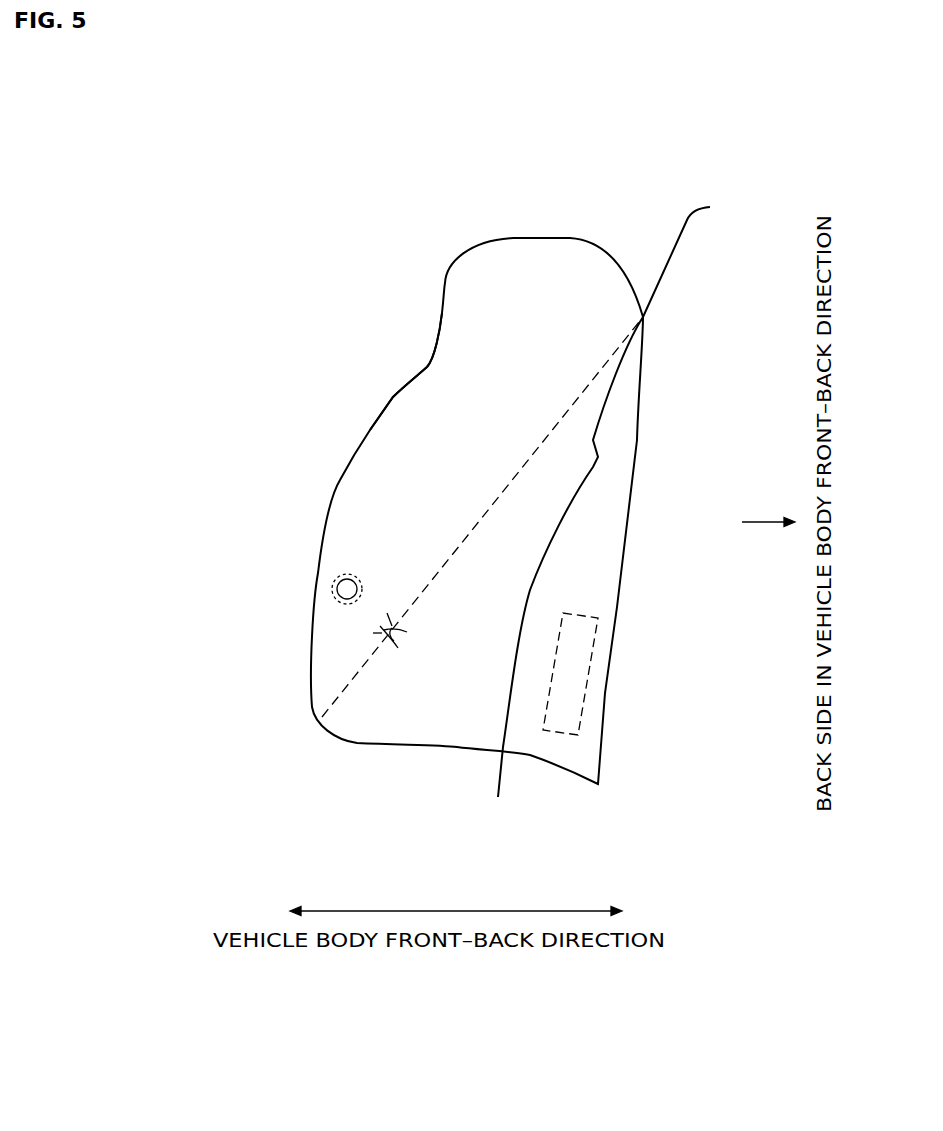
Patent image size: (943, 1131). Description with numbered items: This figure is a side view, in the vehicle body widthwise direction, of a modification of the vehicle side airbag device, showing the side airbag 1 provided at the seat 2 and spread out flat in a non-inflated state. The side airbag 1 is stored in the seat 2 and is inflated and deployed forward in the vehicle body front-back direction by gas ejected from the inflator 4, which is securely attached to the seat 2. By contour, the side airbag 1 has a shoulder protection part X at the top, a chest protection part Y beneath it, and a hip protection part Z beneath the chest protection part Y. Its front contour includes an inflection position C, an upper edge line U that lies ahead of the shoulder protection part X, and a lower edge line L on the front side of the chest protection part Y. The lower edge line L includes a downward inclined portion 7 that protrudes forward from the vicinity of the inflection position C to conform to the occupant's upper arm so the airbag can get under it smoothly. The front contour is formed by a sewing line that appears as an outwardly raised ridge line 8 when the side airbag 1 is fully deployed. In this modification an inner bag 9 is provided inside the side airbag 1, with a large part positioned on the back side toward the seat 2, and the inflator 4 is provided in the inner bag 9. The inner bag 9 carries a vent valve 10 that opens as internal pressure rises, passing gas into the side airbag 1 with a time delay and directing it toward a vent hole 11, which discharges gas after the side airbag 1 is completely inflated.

The side airbag 1 is at (613, 225).
The seat 2 is at (687, 220).
The inflator 4 is at (580, 723).
The downward inclined portion 7 is at (398, 396).
The ridge line 8 is at (412, 382).
The inner bag 9 is at (543, 440).
The vent valve 10 is at (402, 633).
The vent hole 11 is at (333, 586).
The shoulder protection part X is at (495, 270).
The upper edge line U is at (443, 293).
The inflection position C is at (430, 360).
The chest protection part Y is at (378, 445).
The lower edge line L is at (373, 417).
The hip protection part Z is at (452, 722).